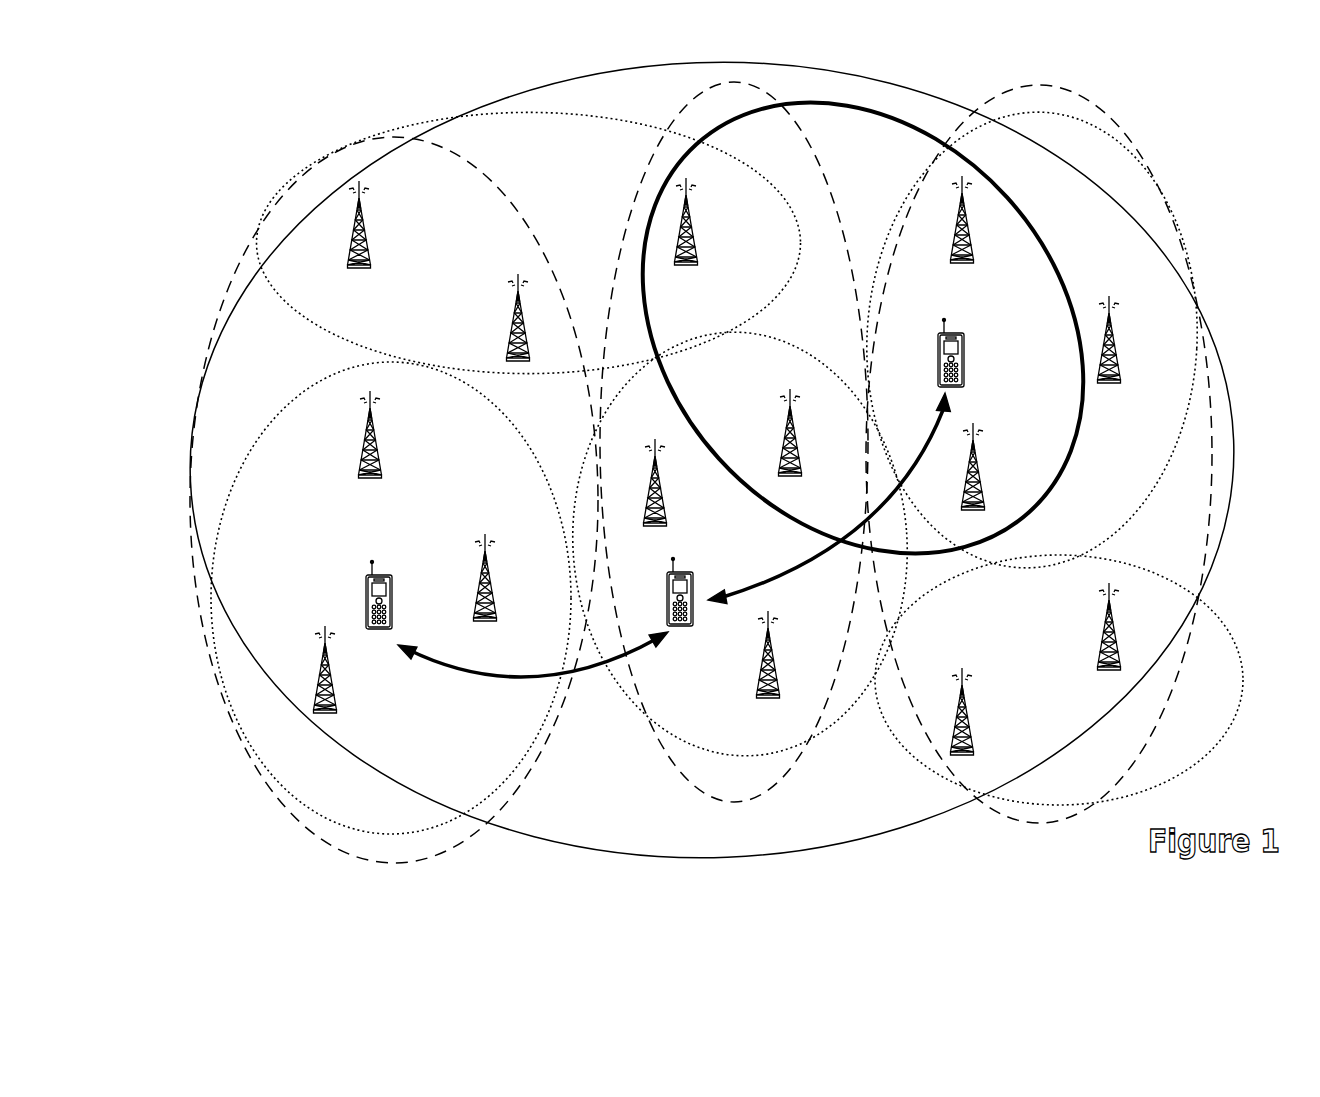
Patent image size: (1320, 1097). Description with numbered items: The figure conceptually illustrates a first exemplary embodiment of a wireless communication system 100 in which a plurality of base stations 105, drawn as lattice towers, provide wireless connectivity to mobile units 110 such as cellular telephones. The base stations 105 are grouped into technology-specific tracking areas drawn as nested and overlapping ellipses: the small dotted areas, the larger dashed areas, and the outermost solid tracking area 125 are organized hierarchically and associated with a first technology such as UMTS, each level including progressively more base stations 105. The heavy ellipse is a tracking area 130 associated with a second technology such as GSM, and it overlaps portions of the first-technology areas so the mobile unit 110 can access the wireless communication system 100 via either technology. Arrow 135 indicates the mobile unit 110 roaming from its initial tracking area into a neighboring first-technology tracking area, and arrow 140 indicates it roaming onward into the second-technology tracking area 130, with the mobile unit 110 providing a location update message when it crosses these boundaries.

The wireless communication system 100 is at (1168, 97).
The base station 105 is at (373, 477).
The mobile unit 110 is at (384, 575).
The tracking area 125 is at (1218, 358).
The tracking area 130 is at (868, 117).
The arrow 135 is at (487, 675).
The arrow 140 is at (793, 563).